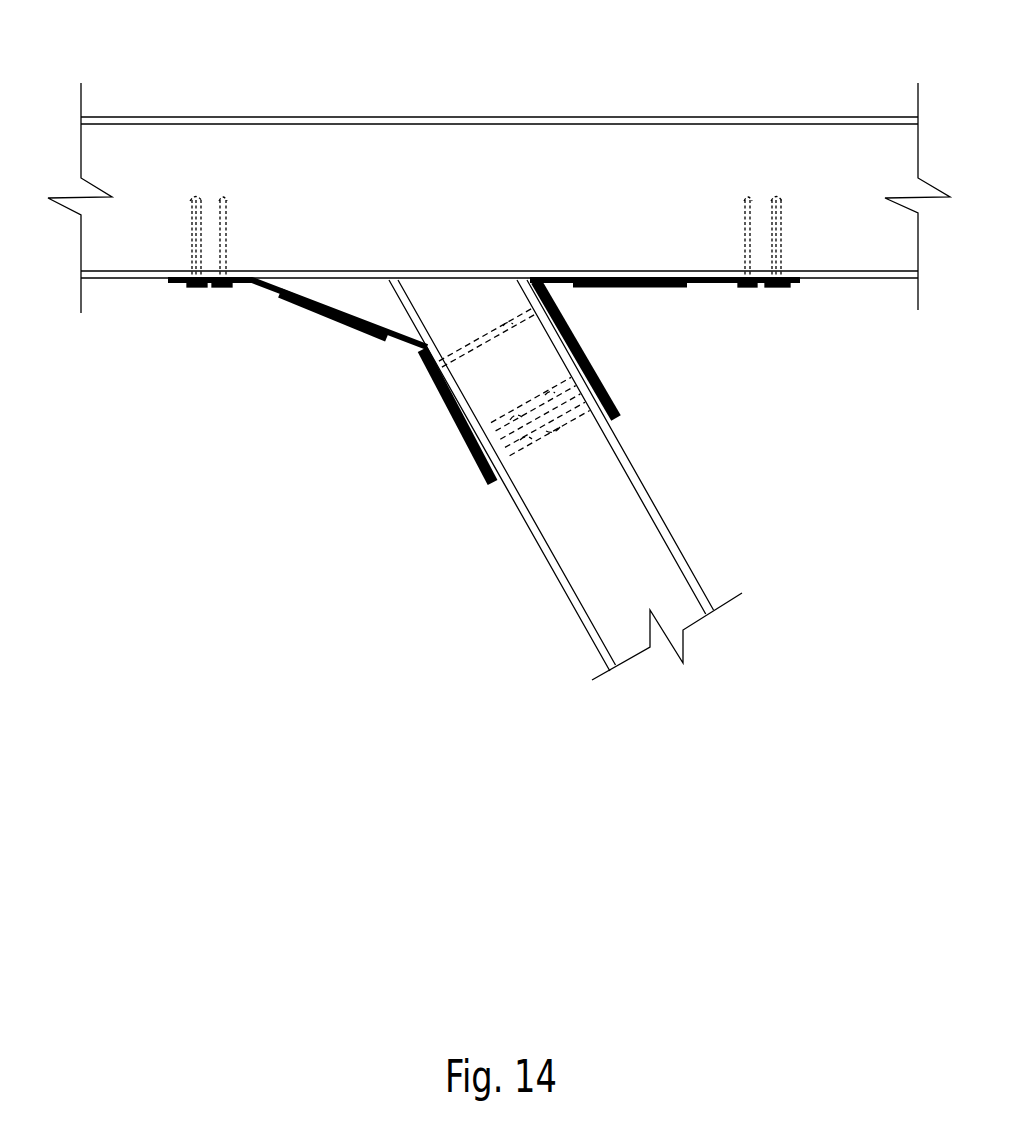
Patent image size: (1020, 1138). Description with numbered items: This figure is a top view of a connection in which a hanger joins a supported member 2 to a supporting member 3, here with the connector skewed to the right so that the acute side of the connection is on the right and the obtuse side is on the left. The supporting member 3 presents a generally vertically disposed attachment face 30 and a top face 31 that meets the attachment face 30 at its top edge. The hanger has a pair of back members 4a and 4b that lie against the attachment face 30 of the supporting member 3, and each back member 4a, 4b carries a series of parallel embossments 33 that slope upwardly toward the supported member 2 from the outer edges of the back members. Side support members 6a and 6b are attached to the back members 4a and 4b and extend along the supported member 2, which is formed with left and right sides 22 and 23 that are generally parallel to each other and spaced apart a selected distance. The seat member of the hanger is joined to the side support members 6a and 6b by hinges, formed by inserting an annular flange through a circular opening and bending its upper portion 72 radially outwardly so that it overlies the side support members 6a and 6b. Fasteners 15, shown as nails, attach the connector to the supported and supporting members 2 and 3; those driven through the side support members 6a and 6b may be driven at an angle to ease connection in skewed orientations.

The supported member 2 is at (587, 480).
The left side of supported member 22 is at (547, 555).
The right side of supported member 23 is at (653, 497).
The supporting member 3 is at (499, 180).
The attachment face 30 is at (830, 280).
The top face of supporting member 31 is at (813, 148).
The fasteners 15 is at (227, 227).
The back member 4a is at (278, 282).
The back member 4b is at (697, 271).
The embossments 33 is at (313, 310).
The upper portion of annular flange 72 is at (437, 383).
The side support member 6a is at (502, 483).
The side support member 6b is at (610, 415).